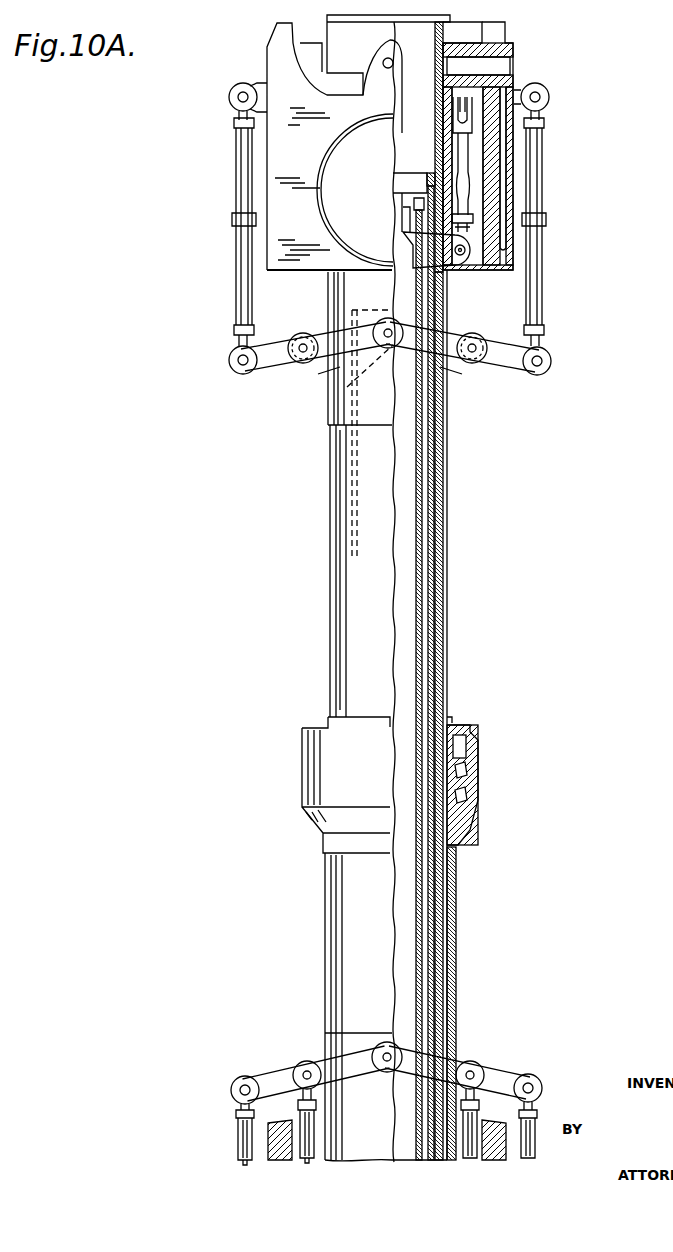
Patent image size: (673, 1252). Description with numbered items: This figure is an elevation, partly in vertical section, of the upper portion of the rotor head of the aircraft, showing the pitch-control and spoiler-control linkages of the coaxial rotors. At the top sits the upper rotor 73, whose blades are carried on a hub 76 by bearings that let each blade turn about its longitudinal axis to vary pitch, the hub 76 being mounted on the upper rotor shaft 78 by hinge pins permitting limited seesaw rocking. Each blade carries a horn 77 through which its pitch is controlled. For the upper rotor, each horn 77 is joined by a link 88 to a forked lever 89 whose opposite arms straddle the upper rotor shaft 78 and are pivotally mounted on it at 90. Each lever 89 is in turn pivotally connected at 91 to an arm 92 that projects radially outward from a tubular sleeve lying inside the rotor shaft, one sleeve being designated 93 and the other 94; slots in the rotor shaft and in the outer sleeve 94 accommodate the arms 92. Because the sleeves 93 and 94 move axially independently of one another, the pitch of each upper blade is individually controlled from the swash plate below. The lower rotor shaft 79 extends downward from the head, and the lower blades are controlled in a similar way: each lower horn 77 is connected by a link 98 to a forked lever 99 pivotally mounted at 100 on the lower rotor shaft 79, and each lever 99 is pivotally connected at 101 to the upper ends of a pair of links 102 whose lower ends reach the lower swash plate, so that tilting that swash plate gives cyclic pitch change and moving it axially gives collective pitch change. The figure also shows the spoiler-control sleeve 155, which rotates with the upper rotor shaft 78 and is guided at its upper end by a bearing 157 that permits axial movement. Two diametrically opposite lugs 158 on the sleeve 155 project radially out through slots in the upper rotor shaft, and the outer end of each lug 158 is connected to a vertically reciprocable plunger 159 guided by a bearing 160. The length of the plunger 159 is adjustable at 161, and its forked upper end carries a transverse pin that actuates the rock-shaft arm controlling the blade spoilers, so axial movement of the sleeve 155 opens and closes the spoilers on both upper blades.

The upper rotor 73 is at (258, 181).
The hub 76 is at (277, 236).
The horn 77 is at (248, 84).
The upper rotor shaft 78 is at (447, 492).
The lower rotor shaft 79 is at (456, 893).
The link 88 is at (233, 270).
The forked lever 89 is at (266, 373).
The pivot 90 is at (387, 318).
The pivotal connection 91 is at (303, 333).
The arm 92 is at (325, 368).
The sleeve 93 is at (353, 403).
The outer sleeve 94 is at (428, 440).
The link 98 is at (238, 1148).
The forked lever 99 is at (272, 1073).
The pivot 100 is at (385, 1043).
The pivotal connection 101 is at (306, 1060).
The links 102 is at (307, 1153).
The sleeve 155 is at (408, 260).
The bearing 157 is at (438, 176).
The lugs 158 is at (456, 268).
The plunger 159 is at (470, 182).
The bearing 160 is at (476, 153).
The adjustment 161 is at (470, 218).